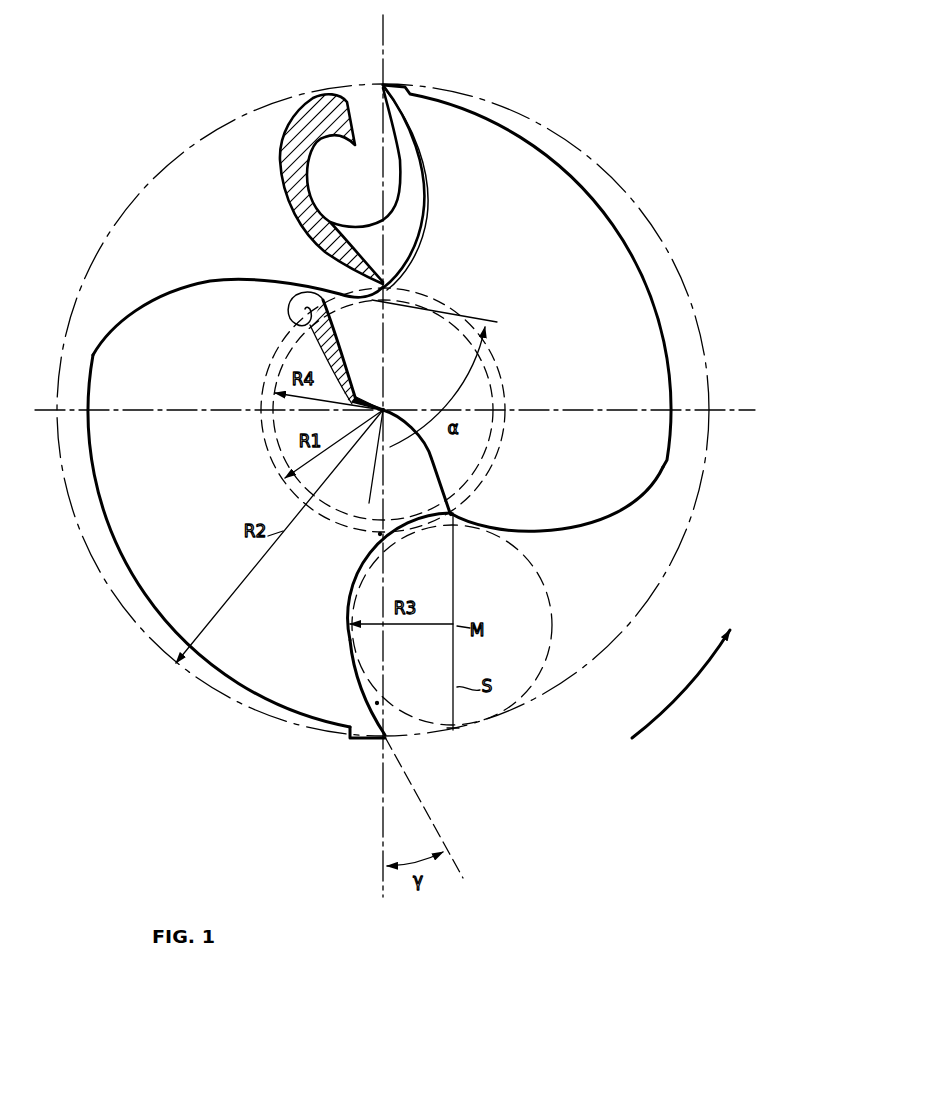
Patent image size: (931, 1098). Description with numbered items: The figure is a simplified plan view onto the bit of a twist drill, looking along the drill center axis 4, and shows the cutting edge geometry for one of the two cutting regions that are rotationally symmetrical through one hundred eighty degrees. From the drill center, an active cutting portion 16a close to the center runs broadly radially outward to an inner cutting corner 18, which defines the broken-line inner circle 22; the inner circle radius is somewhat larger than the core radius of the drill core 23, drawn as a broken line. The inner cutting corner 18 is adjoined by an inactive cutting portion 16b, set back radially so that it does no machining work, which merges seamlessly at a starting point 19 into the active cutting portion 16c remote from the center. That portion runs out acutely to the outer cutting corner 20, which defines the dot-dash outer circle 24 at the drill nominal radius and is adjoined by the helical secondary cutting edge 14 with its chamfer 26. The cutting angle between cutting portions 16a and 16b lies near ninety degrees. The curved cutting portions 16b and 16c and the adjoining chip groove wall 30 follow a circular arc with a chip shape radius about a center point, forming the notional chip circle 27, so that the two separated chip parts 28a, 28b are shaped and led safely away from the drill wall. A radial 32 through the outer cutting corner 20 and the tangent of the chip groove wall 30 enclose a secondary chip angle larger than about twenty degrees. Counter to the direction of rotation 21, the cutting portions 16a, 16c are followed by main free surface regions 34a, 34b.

The drill center axis 4 is at (388, 405).
The secondary cutting edge 14 is at (437, 761).
The active cutting portion close to the center 16a is at (437, 457).
The inactive cutting portion 16b is at (420, 520).
The active cutting portion remote from the center 16c is at (353, 635).
The inner cutting corner 18 is at (455, 517).
The starting point 19 is at (380, 533).
The outer cutting corner 20 is at (390, 740).
The direction of rotation 21 is at (680, 697).
The inner circle 22 is at (503, 390).
The drill core 23 is at (492, 425).
The outer circle 24 is at (657, 590).
The chamfer 26 is at (387, 82).
The chip circle 27 is at (550, 607).
The chip part 28a is at (292, 336).
The chip part 28b is at (280, 143).
The chip groove wall 30 is at (377, 703).
The radial 32 is at (382, 845).
The main free surface region 34a is at (363, 357).
The main free surface region 34b is at (455, 153).